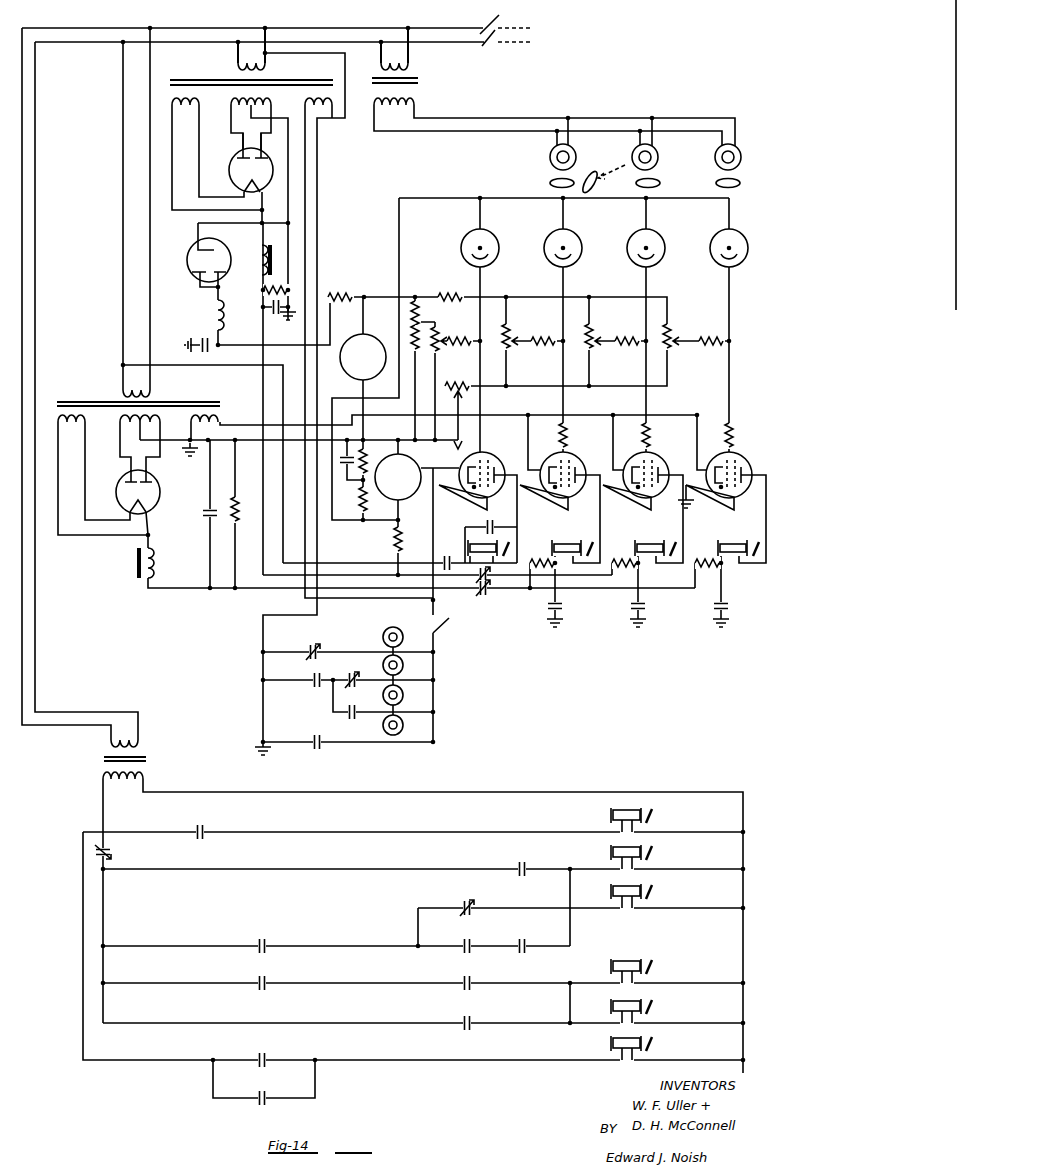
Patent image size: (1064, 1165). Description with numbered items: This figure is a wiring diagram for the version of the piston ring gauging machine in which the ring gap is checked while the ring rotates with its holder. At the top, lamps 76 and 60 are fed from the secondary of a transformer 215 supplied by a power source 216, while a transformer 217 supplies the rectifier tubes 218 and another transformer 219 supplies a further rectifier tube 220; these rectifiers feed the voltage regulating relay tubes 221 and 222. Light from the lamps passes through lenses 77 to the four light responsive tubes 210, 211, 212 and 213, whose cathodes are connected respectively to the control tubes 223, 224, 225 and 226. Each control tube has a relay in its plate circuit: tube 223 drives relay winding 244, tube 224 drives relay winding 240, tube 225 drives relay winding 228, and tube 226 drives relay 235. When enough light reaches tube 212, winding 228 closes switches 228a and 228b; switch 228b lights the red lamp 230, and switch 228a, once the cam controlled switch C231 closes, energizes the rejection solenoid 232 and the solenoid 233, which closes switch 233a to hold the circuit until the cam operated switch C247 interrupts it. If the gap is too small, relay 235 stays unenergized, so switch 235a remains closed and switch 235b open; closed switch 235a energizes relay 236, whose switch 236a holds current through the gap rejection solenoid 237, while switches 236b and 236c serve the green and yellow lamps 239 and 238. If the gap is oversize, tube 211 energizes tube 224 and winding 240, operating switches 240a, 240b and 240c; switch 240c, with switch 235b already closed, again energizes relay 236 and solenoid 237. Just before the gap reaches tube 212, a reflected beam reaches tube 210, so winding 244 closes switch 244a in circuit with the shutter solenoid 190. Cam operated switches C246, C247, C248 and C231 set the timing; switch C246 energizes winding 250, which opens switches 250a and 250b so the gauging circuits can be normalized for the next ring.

The transformer 217 is at (236, 68).
The power source 216 is at (530, 32).
The transformer 215 is at (420, 82).
The rectifier tubes 218 is at (240, 158).
The lamp 76 is at (549, 158).
The light source 60 is at (658, 158).
The lens 77 is at (550, 183).
The light responsive tube 210 is at (461, 248).
The light responsive tube 211 is at (544, 248).
The light responsive tube 212 is at (627, 248).
The light responsive tube 213 is at (711, 248).
The transformer 219 is at (120, 396).
The rectifier tube 220 is at (128, 480).
The voltage regulating relay tube 221 is at (370, 336).
The voltage regulating relay tube 222 is at (406, 500).
The control tube 223 is at (490, 459).
The control tube 224 is at (575, 459).
The control tube 225 is at (658, 459).
The control tube 226 is at (743, 459).
The relay winding 244 is at (470, 539).
The relay winding 240 is at (561, 542).
The relay winding 228 is at (644, 542).
The relay 235 is at (727, 542).
The switch 250a is at (492, 584).
The switch 250b is at (478, 598).
The yellow lamp 238 is at (393, 628).
The green lamp 239 is at (404, 668).
The red lamp 230 is at (404, 729).
The variable condenser 236c is at (322, 636).
The switch 236b is at (314, 684).
The switch 240a is at (351, 676).
The switch 240b is at (352, 718).
The switch 228b is at (318, 749).
The cam operated switch C246 is at (202, 830).
The cam operated switch C247 is at (110, 853).
The cam controlled switch C231 is at (258, 938).
The cam operated switch C248 is at (258, 1052).
The switch 244a is at (258, 1104).
The switch 235a is at (464, 902).
The switch 235b is at (462, 952).
The switch 236a is at (520, 865).
The switch 240c is at (518, 940).
The switch 228a is at (467, 978).
The switch 233a is at (467, 1028).
The winding 250 is at (650, 822).
The gap rejection solenoid 237 is at (650, 859).
The relay 236 is at (650, 898).
The solenoid 233 is at (650, 973).
The solenoid 232 is at (650, 1013).
The solenoid 190 is at (650, 1050).